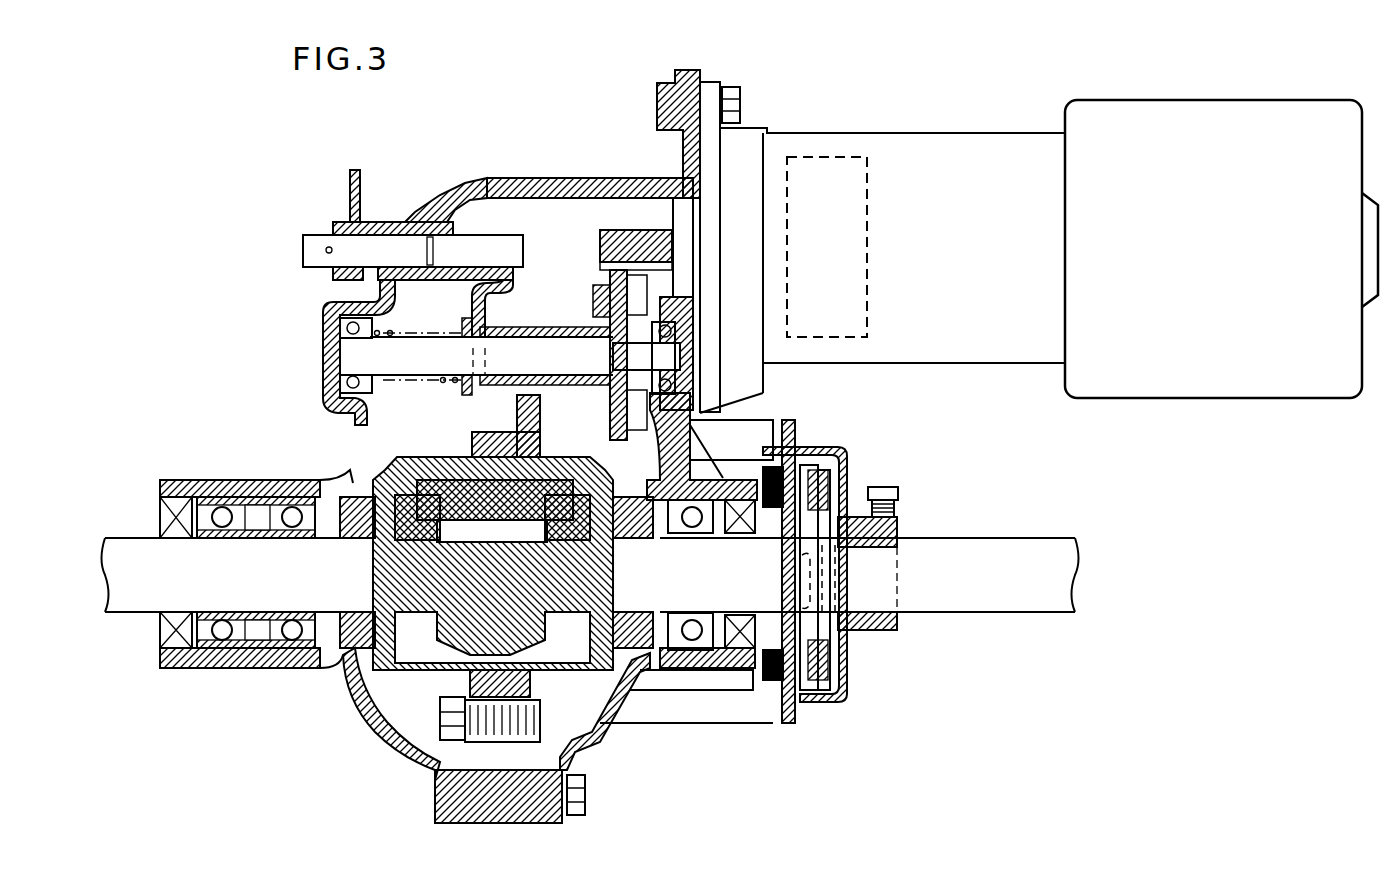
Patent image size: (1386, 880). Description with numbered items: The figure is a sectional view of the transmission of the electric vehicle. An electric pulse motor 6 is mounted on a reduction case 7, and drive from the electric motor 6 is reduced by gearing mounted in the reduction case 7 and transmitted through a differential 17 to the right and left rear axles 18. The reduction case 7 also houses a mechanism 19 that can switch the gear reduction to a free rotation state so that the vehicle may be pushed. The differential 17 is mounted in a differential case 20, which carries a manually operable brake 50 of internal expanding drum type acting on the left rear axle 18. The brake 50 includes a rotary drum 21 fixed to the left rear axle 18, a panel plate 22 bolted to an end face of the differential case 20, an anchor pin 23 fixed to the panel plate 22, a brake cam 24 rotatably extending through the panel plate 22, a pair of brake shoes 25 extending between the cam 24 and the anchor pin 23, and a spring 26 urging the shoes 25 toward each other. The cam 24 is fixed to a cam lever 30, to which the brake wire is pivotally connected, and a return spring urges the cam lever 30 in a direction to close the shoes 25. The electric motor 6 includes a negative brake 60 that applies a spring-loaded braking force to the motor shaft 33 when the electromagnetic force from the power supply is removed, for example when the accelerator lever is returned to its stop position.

The electric pulse motor 6 is at (1143, 106).
The reduction case 7 is at (513, 176).
The differential 17 is at (383, 675).
The rear axles 18 is at (133, 536).
The mechanism 19 is at (445, 400).
The differential case 20 is at (598, 735).
The rotary drum 21 is at (846, 452).
The panel plate 22 is at (785, 727).
The anchor pin 23 is at (848, 672).
The brake cam 24 is at (850, 475).
The brake shoes 25 is at (822, 626).
The spring 26 is at (795, 583).
The cam lever 30 is at (770, 420).
The motor shaft 33 is at (598, 248).
The manually operable brake 50 is at (848, 708).
The negative brake 60 is at (833, 157).